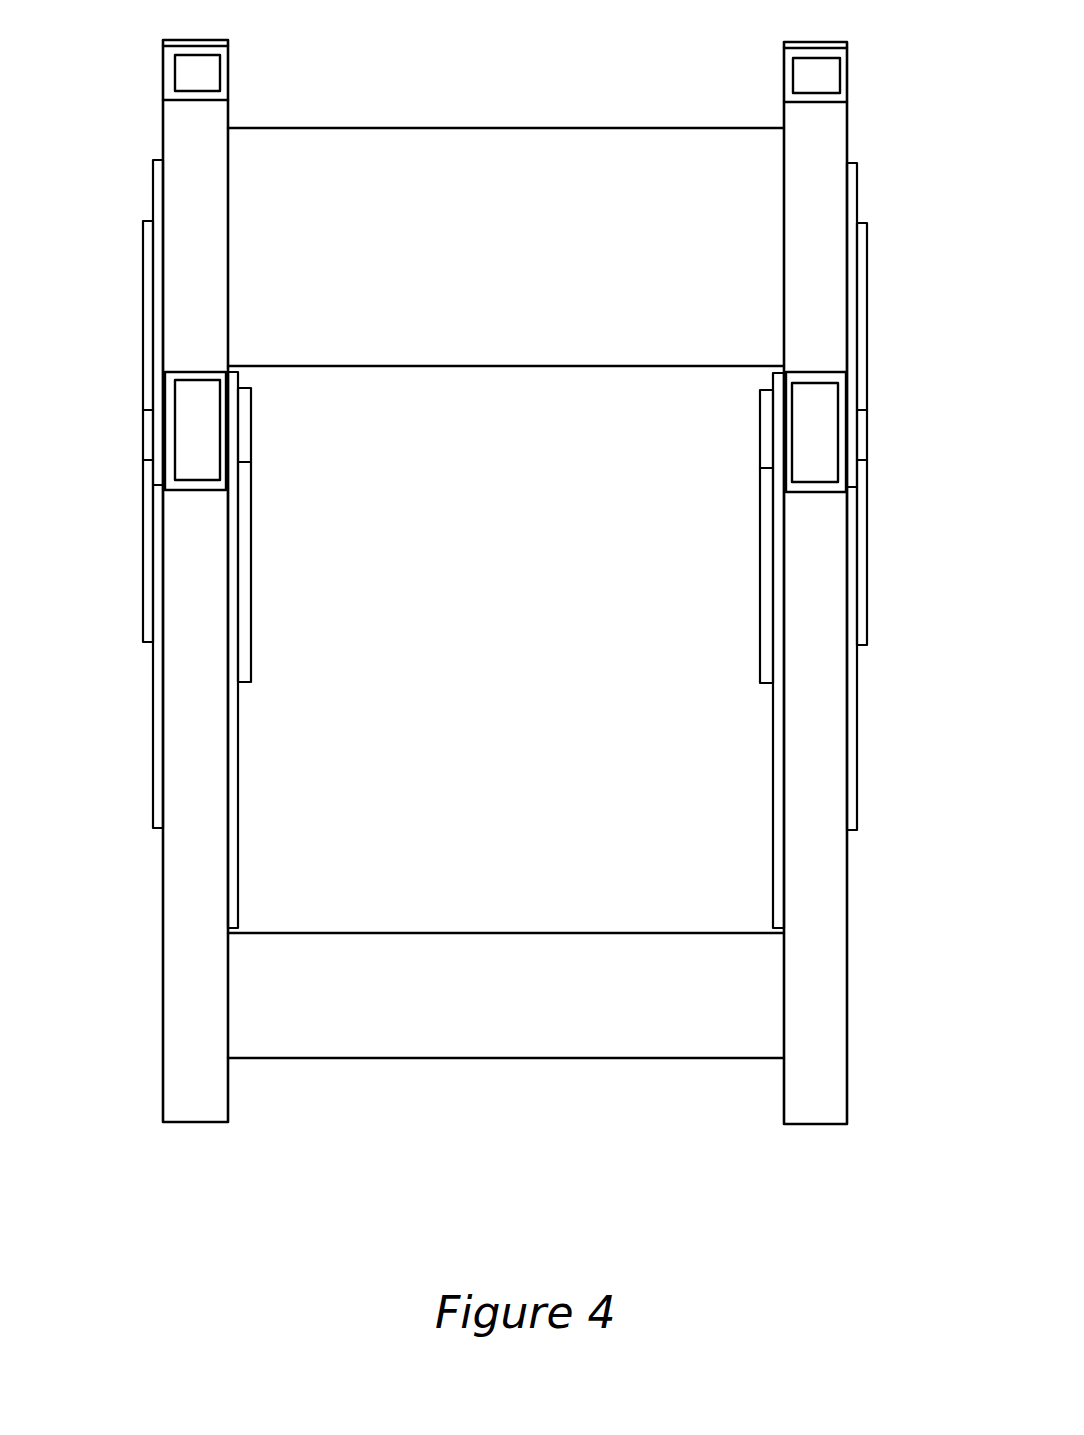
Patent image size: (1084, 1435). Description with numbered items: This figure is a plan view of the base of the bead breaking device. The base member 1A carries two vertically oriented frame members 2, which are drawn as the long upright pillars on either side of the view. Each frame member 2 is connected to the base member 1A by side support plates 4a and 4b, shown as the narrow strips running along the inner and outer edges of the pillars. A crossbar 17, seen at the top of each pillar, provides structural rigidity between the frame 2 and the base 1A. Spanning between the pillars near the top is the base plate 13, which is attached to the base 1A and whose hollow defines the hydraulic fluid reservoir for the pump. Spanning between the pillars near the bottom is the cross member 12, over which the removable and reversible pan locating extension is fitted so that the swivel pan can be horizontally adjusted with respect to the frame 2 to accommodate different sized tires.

The base member 1A is at (213, 747).
The frame member 2 is at (205, 450).
The side support plate 4a is at (145, 583).
The side support plate 4b is at (157, 758).
The cross member 12 is at (628, 1045).
The base plate 13 is at (462, 163).
The crossbar 17 is at (213, 72).